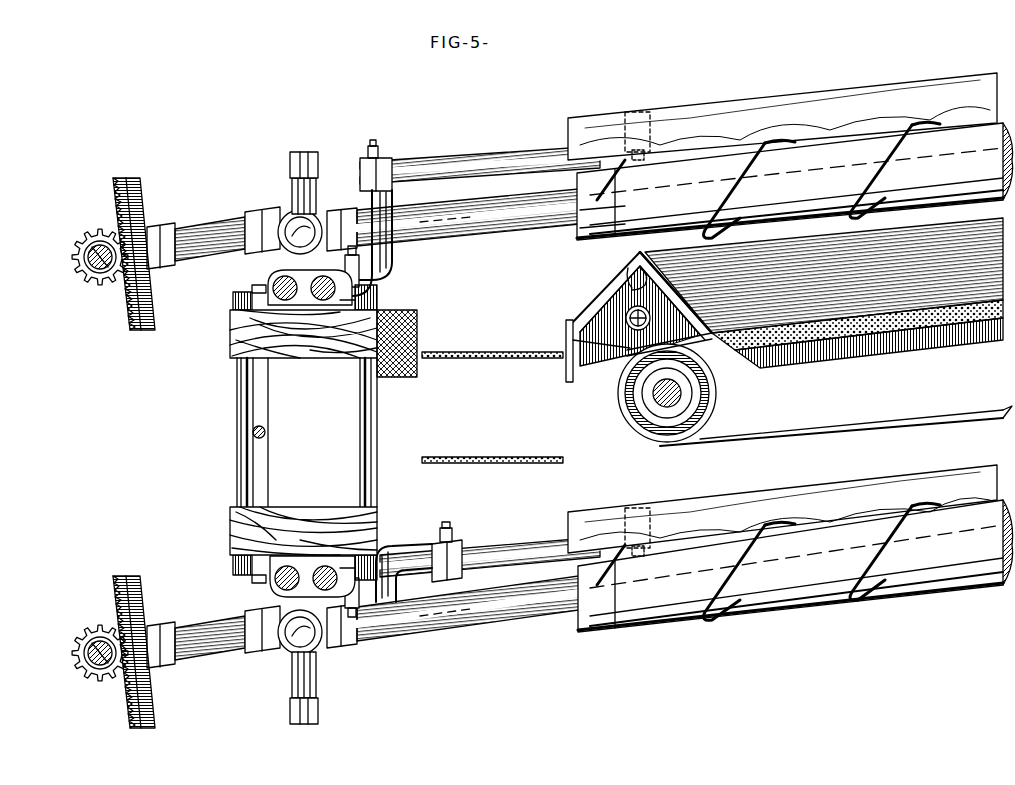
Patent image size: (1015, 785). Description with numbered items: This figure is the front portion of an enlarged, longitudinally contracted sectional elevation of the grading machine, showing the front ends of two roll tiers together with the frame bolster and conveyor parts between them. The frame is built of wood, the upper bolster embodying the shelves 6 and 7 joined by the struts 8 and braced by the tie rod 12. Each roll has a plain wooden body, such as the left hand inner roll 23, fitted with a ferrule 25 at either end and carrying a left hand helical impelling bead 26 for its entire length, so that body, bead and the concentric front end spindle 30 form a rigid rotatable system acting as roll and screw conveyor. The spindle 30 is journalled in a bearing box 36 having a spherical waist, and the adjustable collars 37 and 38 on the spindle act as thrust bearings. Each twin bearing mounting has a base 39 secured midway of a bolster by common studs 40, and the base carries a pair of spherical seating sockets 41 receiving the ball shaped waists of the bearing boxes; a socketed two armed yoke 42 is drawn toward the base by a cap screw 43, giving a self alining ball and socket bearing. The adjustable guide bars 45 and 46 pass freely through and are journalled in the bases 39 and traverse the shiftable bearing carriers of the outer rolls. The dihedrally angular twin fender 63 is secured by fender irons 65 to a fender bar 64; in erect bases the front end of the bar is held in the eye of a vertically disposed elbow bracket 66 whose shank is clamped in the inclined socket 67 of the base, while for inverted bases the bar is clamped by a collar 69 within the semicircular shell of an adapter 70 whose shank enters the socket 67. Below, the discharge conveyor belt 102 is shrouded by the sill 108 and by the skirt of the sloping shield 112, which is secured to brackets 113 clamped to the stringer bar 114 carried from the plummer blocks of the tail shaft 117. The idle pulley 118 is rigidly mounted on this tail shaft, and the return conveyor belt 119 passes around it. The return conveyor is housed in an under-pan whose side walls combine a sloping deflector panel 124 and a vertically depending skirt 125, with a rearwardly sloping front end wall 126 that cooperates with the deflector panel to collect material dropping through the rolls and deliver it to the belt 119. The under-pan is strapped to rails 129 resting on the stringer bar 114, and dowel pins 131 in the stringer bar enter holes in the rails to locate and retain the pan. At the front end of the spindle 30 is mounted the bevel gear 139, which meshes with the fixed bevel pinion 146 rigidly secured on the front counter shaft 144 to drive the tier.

The upper bolster shelf 6 is at (332, 352).
The upper bolster shelf 7 is at (324, 508).
The strut 8 is at (268, 480).
The tie rod 12 is at (265, 428).
The left hand inner roll 23 is at (795, 377).
The ferrule 25 is at (575, 190).
The left hand helical impelling bead 26 is at (890, 160).
The front end spindle 30 is at (538, 224).
The bearing box 36 is at (290, 215).
The adjustable collar 37 is at (252, 218).
The adjustable collar 38 is at (346, 210).
The base 39 is at (233, 300).
The common stud 40 is at (240, 400).
The spherical seating socket 41 is at (268, 275).
The two armed yoke 42 is at (292, 190).
The cap screw 43 is at (304, 152).
The adjustable guide bar 45 is at (273, 288).
The adjustable guide bar 46 is at (378, 296).
The twin fender 63 is at (782, 313).
The fender bar 64 is at (535, 147).
The fender iron 65 is at (638, 112).
The elbow bracket 66 is at (400, 258).
The inclined socket 67 is at (358, 270).
The collar 69 is at (463, 548).
The adapter 70 is at (400, 548).
The conveyor belt 102 is at (495, 358).
The sill 108 is at (392, 372).
The sloping shield 112 is at (596, 292).
The bracket 113 is at (585, 318).
The stringer bar 114 is at (618, 340).
The tail shaft 117 is at (672, 390).
The idle pulley 118 is at (702, 396).
The return conveyor belt 119 is at (870, 332).
The sloping deflector panel 124 is at (968, 235).
The skirt 125 is at (978, 345).
The front end wall 126 is at (708, 312).
The rail 129 is at (643, 273).
The dowel pin 131 is at (651, 318).
The bevel gear 139 is at (124, 178).
The front counter shaft 144 is at (84, 262).
The fixed bevel pinion 146 is at (84, 238).